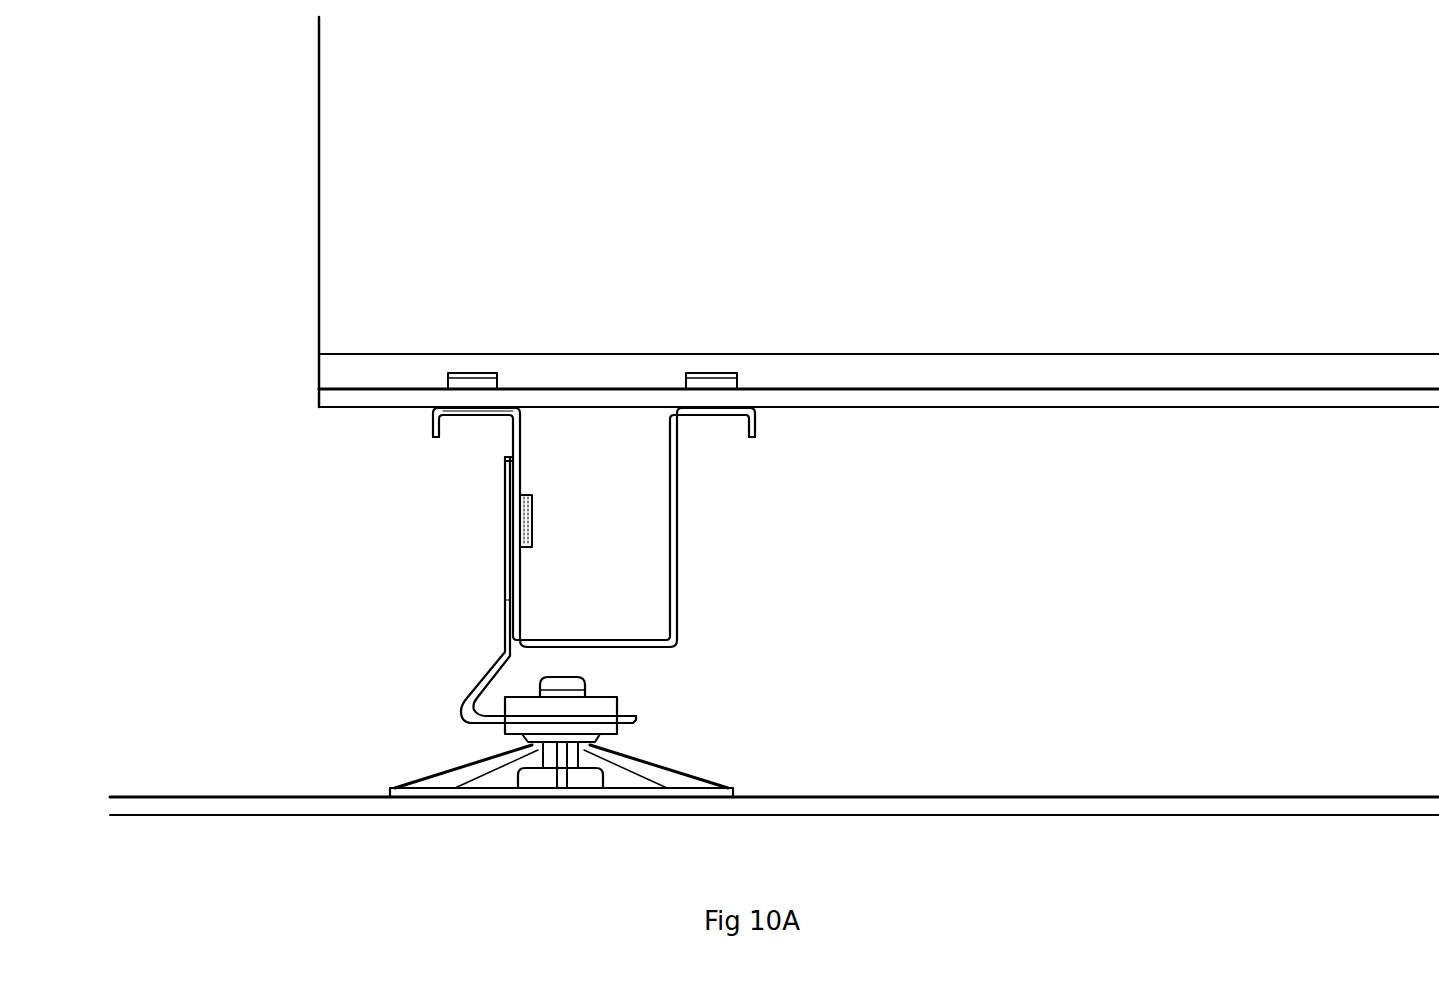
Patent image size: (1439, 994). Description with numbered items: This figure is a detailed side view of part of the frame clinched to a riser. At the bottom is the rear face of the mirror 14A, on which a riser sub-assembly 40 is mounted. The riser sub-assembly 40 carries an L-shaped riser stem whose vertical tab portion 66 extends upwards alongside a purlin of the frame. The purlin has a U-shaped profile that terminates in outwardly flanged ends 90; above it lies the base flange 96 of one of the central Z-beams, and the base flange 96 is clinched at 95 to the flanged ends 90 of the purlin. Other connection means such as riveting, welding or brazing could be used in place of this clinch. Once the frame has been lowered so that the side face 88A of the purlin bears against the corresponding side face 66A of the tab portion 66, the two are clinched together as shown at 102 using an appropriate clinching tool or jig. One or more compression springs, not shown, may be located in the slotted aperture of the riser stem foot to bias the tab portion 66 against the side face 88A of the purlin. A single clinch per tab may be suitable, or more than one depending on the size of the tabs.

The mirror 14A is at (972, 808).
The base flange 96 is at (365, 408).
The clinch 95 is at (475, 372).
The outwardly flanged end 90 is at (482, 418).
The side face of purlin 88A is at (512, 432).
The vertical tab portion 66 is at (508, 548).
The side face of tab portion 66A is at (517, 597).
The clinch 102 is at (534, 509).
The riser sub-assembly 40 is at (752, 733).